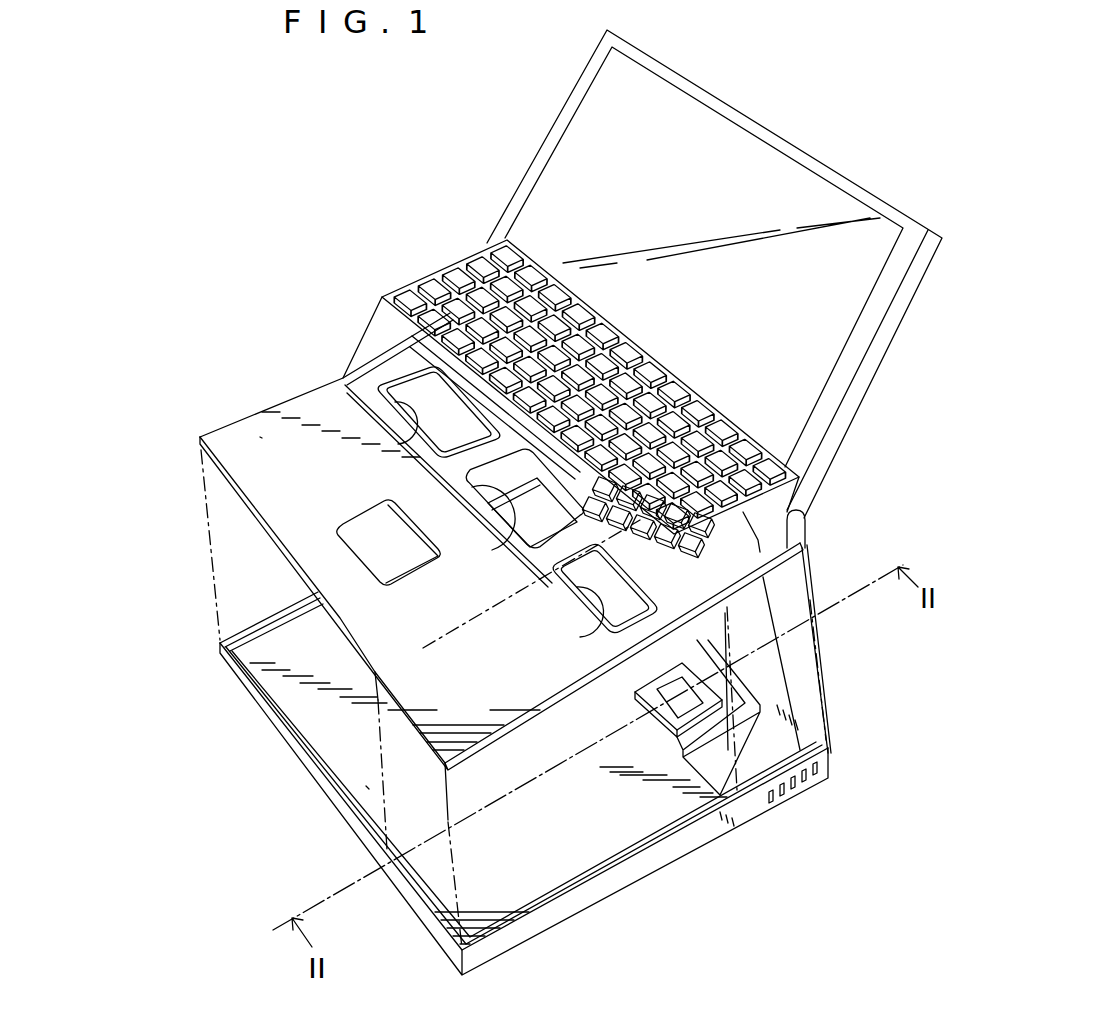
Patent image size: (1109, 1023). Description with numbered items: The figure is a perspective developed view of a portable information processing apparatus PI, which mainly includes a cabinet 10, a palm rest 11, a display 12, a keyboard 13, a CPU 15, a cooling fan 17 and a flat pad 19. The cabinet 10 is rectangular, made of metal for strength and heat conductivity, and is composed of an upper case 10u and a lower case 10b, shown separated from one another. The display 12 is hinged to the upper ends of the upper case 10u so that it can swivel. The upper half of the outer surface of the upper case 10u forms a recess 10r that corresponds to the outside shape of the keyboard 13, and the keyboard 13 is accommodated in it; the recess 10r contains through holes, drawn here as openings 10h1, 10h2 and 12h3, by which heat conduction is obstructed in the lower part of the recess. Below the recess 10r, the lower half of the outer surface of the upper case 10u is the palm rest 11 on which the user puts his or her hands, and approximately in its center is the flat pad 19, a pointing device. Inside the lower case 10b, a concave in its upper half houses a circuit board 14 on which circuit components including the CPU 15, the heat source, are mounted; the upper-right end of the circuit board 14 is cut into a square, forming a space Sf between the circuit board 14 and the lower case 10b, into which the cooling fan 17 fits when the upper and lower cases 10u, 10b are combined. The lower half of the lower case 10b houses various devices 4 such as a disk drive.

The information processing apparatus PI is at (829, 99).
The display 12 is at (701, 84).
The keyboard 13 is at (457, 258).
The cabinet 10 is at (112, 388).
The upper case 10u is at (207, 435).
The lower case 10b is at (218, 645).
The palm rest 11 is at (262, 437).
The recess 10r is at (375, 386).
The first opening 10h1 is at (395, 402).
The second opening 10h2 is at (545, 542).
The third opening 12h3 is at (597, 640).
The flat pad 19 is at (380, 550).
The devices 4 is at (368, 787).
The cooling fan 17 is at (763, 603).
The space Sf is at (750, 748).
The circuit board 14 is at (688, 783).
The CPU 15 is at (680, 712).